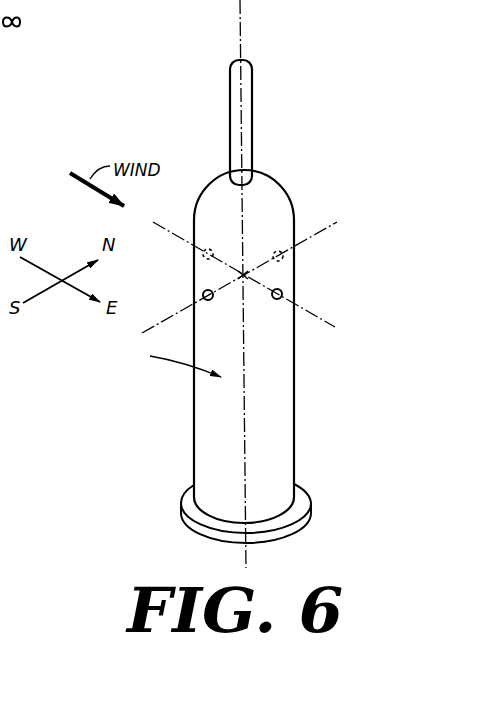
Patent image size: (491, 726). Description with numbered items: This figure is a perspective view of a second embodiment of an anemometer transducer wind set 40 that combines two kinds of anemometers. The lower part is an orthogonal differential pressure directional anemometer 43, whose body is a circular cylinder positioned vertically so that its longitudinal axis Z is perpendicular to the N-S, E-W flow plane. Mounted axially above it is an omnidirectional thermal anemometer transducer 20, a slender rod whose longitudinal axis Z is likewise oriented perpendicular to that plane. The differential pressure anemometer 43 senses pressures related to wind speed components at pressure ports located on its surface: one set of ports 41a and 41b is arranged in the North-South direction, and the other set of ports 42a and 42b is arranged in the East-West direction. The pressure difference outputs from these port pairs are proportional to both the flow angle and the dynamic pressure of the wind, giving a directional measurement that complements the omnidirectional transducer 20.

The longitudinal axis Z is at (240, 18).
The omnidirectional thermal anemometer transducer 20 is at (253, 86).
The anemometer transducer wind set 40 is at (314, 364).
The pressure port 41a is at (284, 258).
The pressure port 41b is at (202, 295).
The pressure port 42a is at (283, 294).
The pressure port 42b is at (204, 257).
The orthogonal differential pressure directional anemometer 43 is at (169, 362).